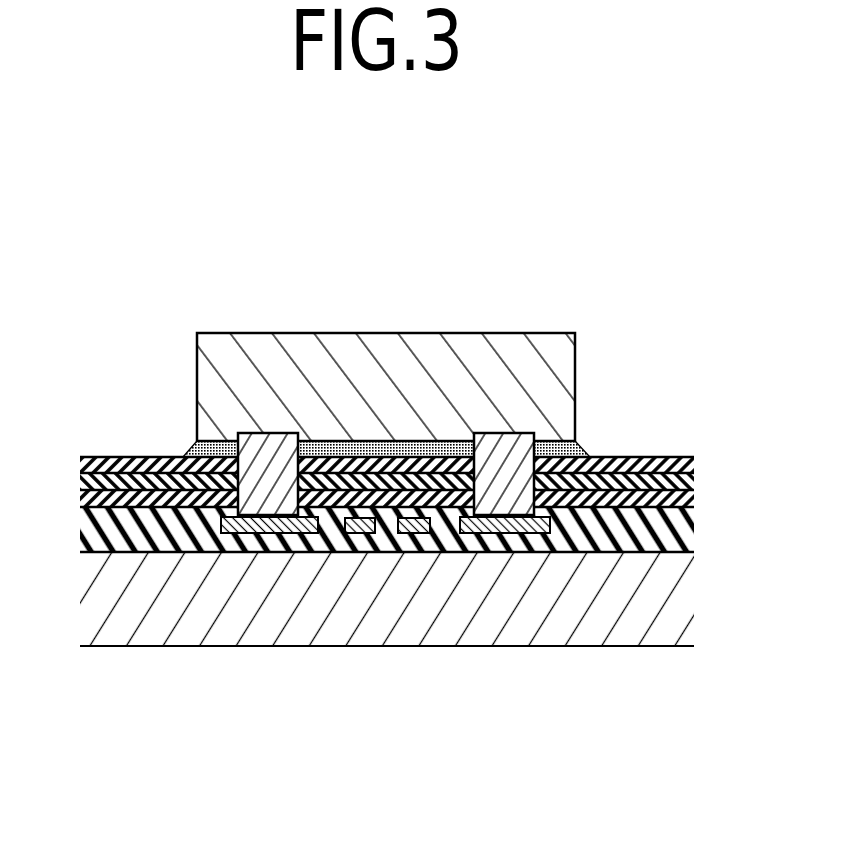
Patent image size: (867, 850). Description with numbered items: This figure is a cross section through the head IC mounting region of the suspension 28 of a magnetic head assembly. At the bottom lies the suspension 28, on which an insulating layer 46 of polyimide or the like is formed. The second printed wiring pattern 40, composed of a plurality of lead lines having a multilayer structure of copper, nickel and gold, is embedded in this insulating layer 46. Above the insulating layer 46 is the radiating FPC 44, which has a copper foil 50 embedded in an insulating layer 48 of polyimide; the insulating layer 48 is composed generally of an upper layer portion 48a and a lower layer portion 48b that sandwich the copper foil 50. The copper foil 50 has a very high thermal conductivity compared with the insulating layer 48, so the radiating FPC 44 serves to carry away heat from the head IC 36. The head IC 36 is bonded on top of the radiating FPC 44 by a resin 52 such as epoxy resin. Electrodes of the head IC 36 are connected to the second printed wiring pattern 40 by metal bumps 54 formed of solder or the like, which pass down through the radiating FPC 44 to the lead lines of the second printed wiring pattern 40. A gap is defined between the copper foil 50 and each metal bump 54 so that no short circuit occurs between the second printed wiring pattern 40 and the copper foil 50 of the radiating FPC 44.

The suspension 28 is at (200, 628).
The head IC 36 is at (381, 333).
The second printed wiring pattern 40 is at (358, 535).
The radiating FPC 44 is at (428, 456).
The insulating layer 46 is at (100, 542).
The insulating layer 48 is at (459, 461).
The upper layer portion 48a is at (693, 462).
The lower layer portion 48b is at (693, 495).
The copper foil 50 is at (133, 458).
The resin 52 is at (577, 445).
The metal bumps 54 is at (264, 436).